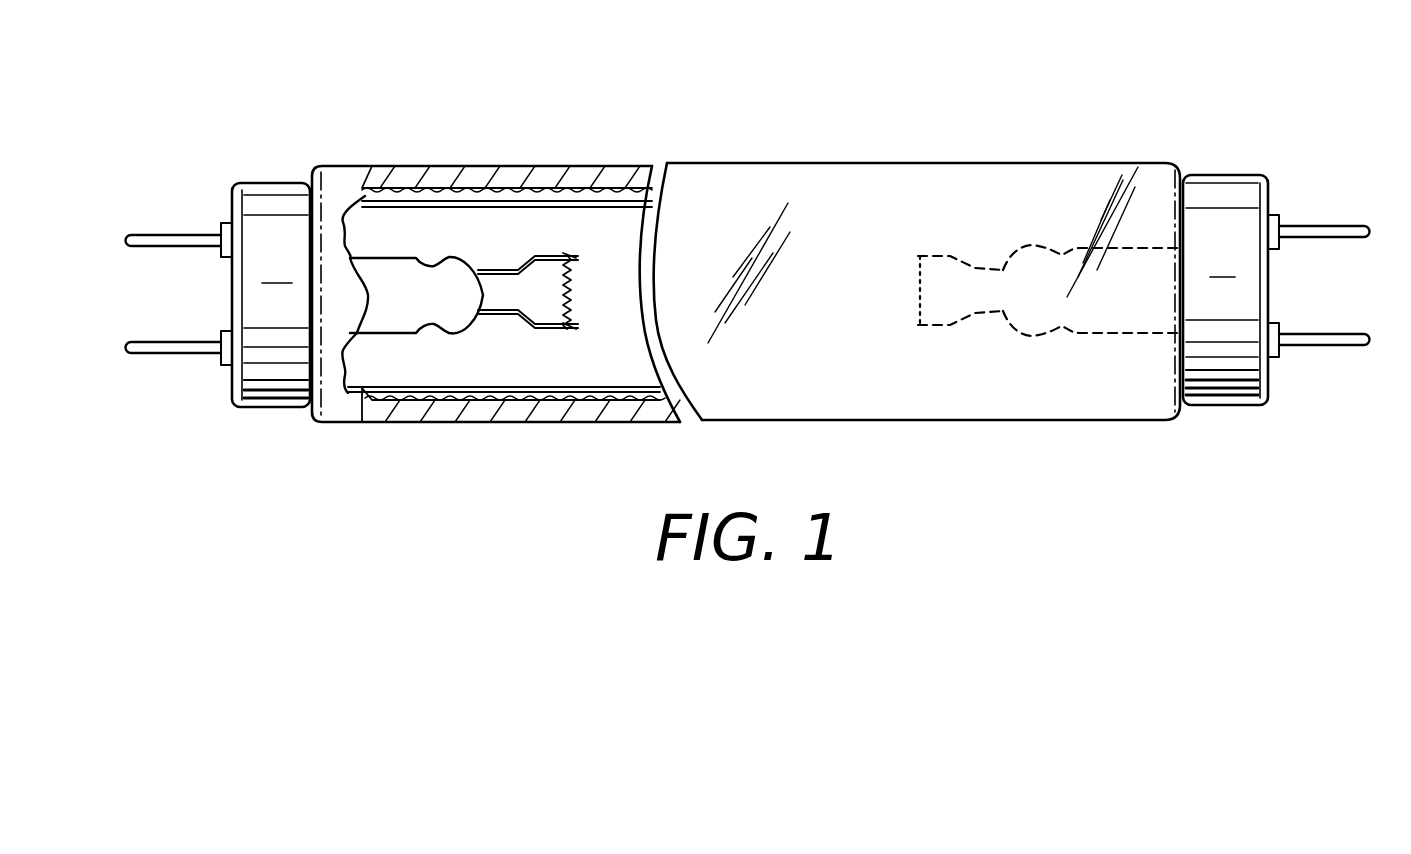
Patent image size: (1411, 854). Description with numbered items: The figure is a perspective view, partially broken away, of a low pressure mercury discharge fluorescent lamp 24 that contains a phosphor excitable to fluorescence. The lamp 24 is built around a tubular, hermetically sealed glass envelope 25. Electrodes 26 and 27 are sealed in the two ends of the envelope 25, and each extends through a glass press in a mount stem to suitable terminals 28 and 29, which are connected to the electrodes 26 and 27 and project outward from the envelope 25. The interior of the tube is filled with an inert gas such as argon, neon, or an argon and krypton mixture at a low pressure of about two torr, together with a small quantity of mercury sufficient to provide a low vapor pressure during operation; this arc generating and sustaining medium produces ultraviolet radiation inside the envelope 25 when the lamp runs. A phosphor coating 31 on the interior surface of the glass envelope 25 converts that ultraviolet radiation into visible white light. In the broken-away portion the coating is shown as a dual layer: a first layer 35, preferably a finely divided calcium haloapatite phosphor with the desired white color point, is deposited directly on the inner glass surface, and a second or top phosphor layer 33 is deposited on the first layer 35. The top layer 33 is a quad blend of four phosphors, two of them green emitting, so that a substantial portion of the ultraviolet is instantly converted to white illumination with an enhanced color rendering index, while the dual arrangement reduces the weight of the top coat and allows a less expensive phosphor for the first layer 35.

The fluorescent lamp 24 is at (919, 93).
The glass envelope 25 is at (800, 163).
The electrode 26 is at (572, 290).
The electrode 27 is at (918, 292).
The terminal 28 is at (174, 234).
The terminal 29 is at (1322, 226).
The phosphor coating 31 is at (567, 187).
The second phosphor layer 33 is at (403, 389).
The first phosphor layer 35 is at (545, 422).